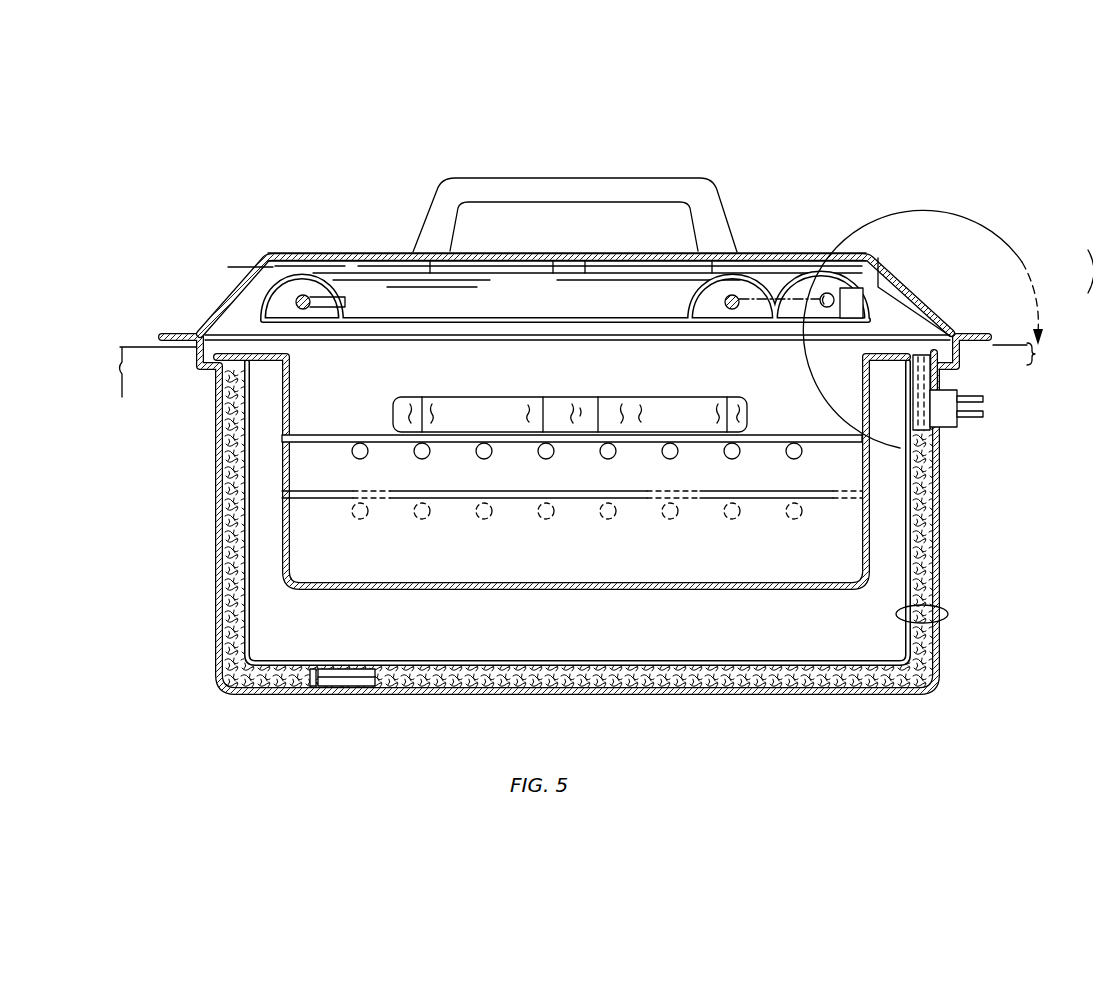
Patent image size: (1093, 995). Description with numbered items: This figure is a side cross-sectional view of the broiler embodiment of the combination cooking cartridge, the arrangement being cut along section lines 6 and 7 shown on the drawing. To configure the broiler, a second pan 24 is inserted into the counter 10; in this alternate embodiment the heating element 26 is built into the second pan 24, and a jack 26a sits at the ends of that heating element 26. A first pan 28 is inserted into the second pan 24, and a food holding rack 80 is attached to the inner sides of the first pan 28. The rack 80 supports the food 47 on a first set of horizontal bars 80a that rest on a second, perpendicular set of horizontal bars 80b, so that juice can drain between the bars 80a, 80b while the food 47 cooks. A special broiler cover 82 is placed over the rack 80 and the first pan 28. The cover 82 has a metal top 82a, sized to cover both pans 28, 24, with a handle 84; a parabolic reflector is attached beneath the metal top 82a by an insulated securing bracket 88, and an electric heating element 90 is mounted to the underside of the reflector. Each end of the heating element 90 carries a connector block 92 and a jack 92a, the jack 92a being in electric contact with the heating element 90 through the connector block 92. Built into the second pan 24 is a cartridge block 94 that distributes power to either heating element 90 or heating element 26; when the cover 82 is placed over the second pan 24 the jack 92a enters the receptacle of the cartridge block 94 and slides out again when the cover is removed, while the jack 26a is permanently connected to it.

The section line 6- 6 is at (237, 276).
The section line 7- 7 is at (933, 437).
The counter 10 is at (130, 347).
The second pan 24 is at (946, 617).
The heating element 26 is at (350, 683).
The jack 26a is at (960, 389).
The first pan 28 is at (783, 584).
The food 47 is at (654, 410).
The food holding rack 80 is at (764, 430).
The first set of horizontal bars 80a is at (732, 456).
The second set of horizontal bars 80b is at (645, 445).
The broiler cover 82 is at (779, 233).
The metal top 82a is at (330, 253).
The handle 84 is at (476, 183).
The insulated securing bracket 88 is at (404, 265).
The electric heating element 90 is at (722, 303).
The connector block 92 is at (906, 311).
The jack 92a is at (937, 370).
The cartridge block 94 is at (955, 416).